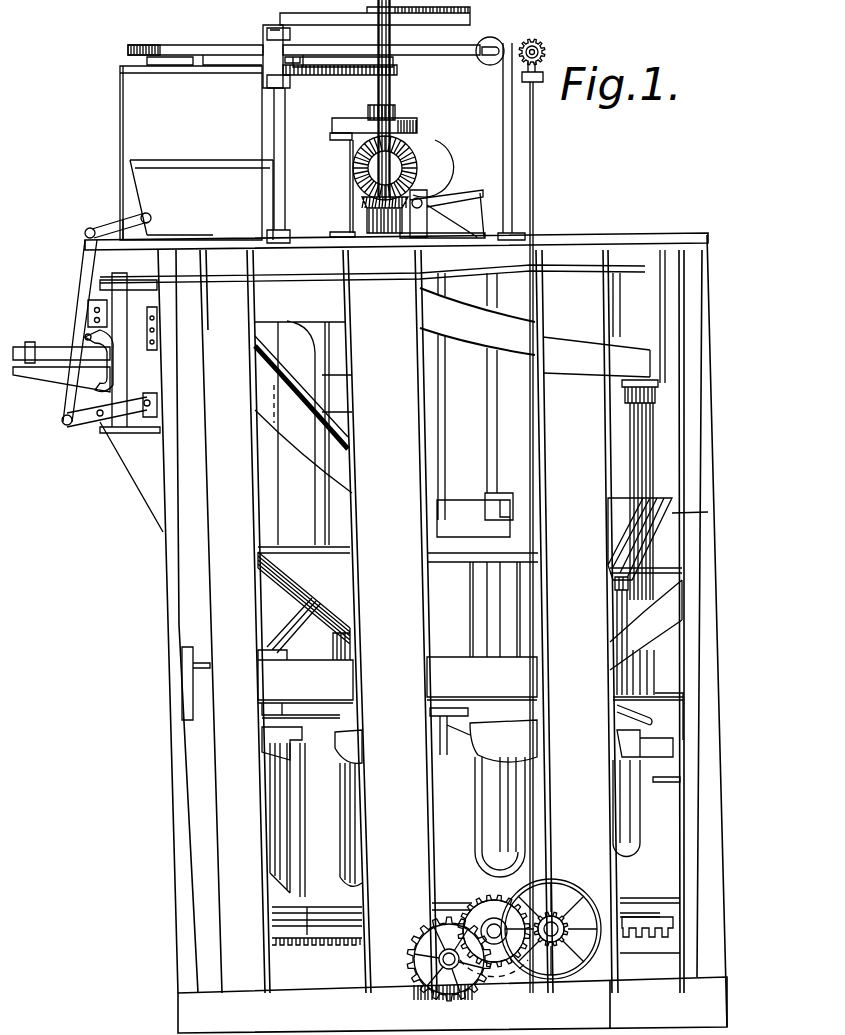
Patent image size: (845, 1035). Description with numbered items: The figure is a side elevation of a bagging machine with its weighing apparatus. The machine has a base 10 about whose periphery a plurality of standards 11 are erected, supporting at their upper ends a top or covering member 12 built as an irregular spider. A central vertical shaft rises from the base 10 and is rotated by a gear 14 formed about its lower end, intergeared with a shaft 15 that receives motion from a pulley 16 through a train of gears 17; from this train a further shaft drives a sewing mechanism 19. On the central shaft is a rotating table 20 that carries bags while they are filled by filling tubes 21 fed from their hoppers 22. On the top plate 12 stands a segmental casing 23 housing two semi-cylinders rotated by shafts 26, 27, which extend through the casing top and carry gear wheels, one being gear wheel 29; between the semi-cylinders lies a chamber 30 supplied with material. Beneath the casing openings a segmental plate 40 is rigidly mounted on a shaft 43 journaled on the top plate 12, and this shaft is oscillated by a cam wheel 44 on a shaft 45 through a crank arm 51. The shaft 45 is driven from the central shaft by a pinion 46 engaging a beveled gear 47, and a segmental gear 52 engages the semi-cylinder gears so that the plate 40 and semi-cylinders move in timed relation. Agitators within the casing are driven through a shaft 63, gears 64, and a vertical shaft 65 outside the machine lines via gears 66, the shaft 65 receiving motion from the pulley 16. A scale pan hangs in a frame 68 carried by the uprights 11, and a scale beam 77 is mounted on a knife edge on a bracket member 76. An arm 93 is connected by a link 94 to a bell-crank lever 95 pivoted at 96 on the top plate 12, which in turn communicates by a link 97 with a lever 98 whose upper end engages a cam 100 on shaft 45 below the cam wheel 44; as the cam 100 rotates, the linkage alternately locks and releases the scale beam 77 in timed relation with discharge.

The base 10 is at (452, 1005).
The standards 11 is at (182, 847).
The top or covering member 12 is at (662, 237).
The gear 14 is at (675, 927).
The shaft 15 is at (405, 960).
The pulley 16 is at (590, 893).
The train of gears 17 is at (478, 900).
The sewing mechanism 19 is at (688, 758).
The rotating table 20 is at (660, 895).
The filling tubes 21 is at (250, 826).
The hoppers 22 is at (728, 508).
The segmental casing 23 is at (125, 108).
The shaft 26 is at (338, 38).
The shaft 27 is at (147, 59).
The gear wheel 29 is at (155, 40).
The chamber 30 is at (112, 285).
The segmental plate 40 is at (437, 150).
The shaft 43 is at (272, 123).
The cam wheel 44 is at (450, 25).
The shaft 45 is at (370, 172).
The pinion 46 is at (362, 205).
The beveled gear 47 is at (358, 186).
The crank arm 51 is at (280, 26).
The segmental gear 52 is at (212, 40).
The shaft 63 is at (532, 39).
The gears 64 is at (497, 33).
The shaft 65 is at (513, 170).
The gears 66 is at (545, 60).
The frame 68 is at (118, 372).
The bracket member 76 is at (50, 377).
The scale beam 77 is at (45, 348).
The arm 93 is at (85, 425).
The link 94 is at (88, 255).
The bell-crank lever 95 is at (100, 228).
The pivot 96 is at (150, 215).
The link 97 is at (190, 160).
The lever 98 is at (342, 140).
The cam 100 is at (402, 120).